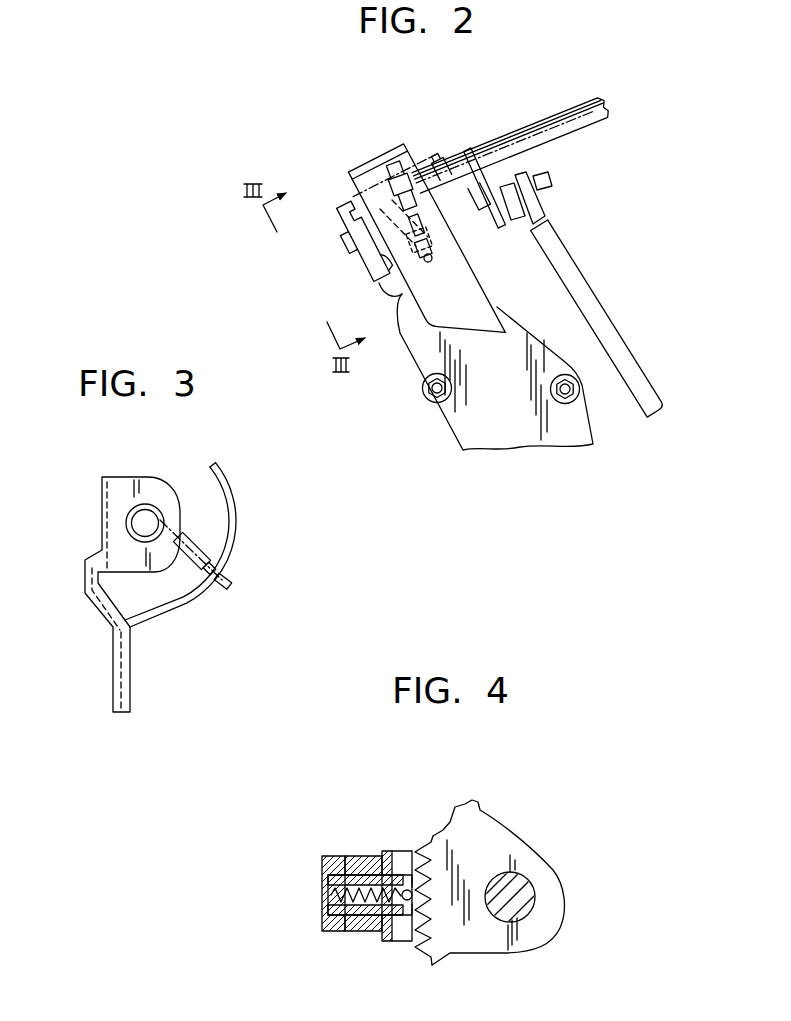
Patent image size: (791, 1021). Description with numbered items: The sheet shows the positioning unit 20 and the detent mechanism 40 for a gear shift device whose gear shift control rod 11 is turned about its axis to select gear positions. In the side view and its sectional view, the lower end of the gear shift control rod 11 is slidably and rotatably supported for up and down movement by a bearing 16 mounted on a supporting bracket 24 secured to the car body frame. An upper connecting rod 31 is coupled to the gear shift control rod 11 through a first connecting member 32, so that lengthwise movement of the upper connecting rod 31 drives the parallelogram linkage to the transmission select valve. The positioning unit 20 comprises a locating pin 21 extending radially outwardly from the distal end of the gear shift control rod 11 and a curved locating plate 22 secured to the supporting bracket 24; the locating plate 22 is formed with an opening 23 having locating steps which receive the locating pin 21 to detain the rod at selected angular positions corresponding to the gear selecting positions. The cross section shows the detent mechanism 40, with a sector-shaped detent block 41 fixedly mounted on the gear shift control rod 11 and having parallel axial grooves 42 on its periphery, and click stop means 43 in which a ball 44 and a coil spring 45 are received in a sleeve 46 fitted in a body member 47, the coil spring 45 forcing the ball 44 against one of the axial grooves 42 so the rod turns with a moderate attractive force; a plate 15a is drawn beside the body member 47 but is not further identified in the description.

In FIG. 2, the gear shift control rod 11 is at (547, 122).
In FIG. 3, the gear shift control rod 11 is at (142, 524).
In FIG. 4, the gear shift control rod 11 is at (523, 887).
In FIG. 4, the mounting plate flange 15a is at (386, 850).
In FIG. 2, the bearing 16 is at (362, 229).
In FIG. 2, the positioning unit 20 is at (418, 233).
In FIG. 3, the positioning unit 20 is at (221, 575).
In FIG. 2, the locating pin 21 is at (400, 286).
In FIG. 3, the locating pin 21 is at (232, 578).
In FIG. 2, the curved locating plate 22 is at (368, 172).
In FIG. 3, the curved locating plate 22 is at (230, 482).
In FIG. 2, the opening 23 is at (443, 237).
In FIG. 3, the opening 23 is at (236, 529).
In FIG. 2, the supporting bracket 24 is at (418, 358).
In FIG. 3, the supporting bracket 24 is at (113, 690).
In FIG. 2, the upper connecting rod 31 is at (597, 298).
In FIG. 2, the first connecting member 32 is at (487, 160).
In FIG. 4, the detent mechanism 40 is at (432, 867).
In FIG. 4, the sector-shaped detent block 41 is at (503, 845).
In FIG. 4, the axial grooves 42 is at (447, 835).
In FIG. 4, the click stop means 43 is at (356, 846).
In FIG. 4, the ball 44 is at (407, 902).
In FIG. 4, the coil spring 45 is at (350, 906).
In FIG. 4, the sleeve 46 is at (365, 876).
In FIG. 4, the body member 47 is at (330, 855).